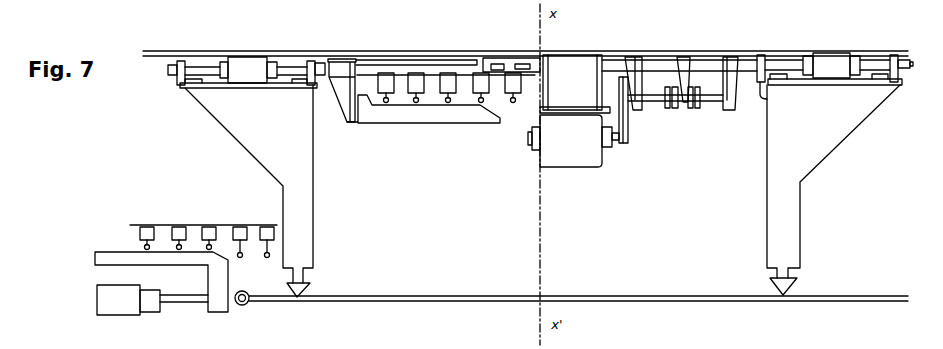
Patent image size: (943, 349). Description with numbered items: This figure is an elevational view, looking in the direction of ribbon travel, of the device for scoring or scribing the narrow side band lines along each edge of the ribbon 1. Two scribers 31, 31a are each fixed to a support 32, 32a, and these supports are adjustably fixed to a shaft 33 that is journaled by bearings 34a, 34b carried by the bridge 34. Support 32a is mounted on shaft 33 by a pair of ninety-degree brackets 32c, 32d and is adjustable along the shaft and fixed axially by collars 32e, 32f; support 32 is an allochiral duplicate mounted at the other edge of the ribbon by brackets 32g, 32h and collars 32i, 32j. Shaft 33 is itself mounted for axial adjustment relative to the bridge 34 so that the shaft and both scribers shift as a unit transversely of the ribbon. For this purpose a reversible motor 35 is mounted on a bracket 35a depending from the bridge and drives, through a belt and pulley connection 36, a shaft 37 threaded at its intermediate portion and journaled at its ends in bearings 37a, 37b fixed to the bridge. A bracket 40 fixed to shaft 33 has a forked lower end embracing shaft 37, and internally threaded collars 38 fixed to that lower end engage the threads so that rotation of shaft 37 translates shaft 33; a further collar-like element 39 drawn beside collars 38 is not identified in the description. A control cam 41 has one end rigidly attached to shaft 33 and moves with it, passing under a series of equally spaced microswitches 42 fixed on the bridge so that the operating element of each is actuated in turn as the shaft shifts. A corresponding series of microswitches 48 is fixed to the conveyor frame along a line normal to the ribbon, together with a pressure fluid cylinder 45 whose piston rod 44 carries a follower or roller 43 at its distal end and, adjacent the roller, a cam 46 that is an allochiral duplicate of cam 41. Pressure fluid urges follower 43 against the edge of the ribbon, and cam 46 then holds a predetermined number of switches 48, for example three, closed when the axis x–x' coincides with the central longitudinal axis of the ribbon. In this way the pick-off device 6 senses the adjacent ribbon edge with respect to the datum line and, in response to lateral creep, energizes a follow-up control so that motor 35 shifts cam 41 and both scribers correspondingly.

The ribbon 1 is at (665, 302).
The pick-off device 6 is at (81, 284).
The scriber 31 is at (308, 287).
The scriber 31a is at (796, 281).
The scriber support 32 is at (313, 193).
The scriber support 32a is at (800, 200).
The bracket 32c is at (770, 58).
The bracket 32d is at (878, 84).
The collar 32e is at (767, 98).
The collar 32f is at (902, 66).
The bracket 32g is at (183, 89).
The bracket 32h is at (306, 85).
The collar 32i is at (318, 77).
The collar 32j is at (172, 74).
The shaft 33 is at (657, 61).
The bridge 34 is at (423, 52).
The bearing 34a is at (833, 58).
The bearing 34b is at (243, 60).
The motor 35 is at (581, 155).
The bracket 35a is at (550, 72).
The belt and pulley connection 36 is at (628, 127).
The shaft 37 is at (712, 100).
The bearing 37a is at (637, 62).
The bearing 37b is at (732, 60).
The collars 38 is at (691, 109).
The pulley 39 is at (673, 109).
The bracket 40 is at (697, 60).
The control cam 41 is at (417, 116).
The microswitches 42 is at (479, 100).
The follower 43 is at (243, 306).
The piston rod 44 is at (185, 305).
The pressure fluid cylinder 45 is at (122, 310).
The cam 46 is at (115, 252).
The microswitches 48 is at (240, 224).